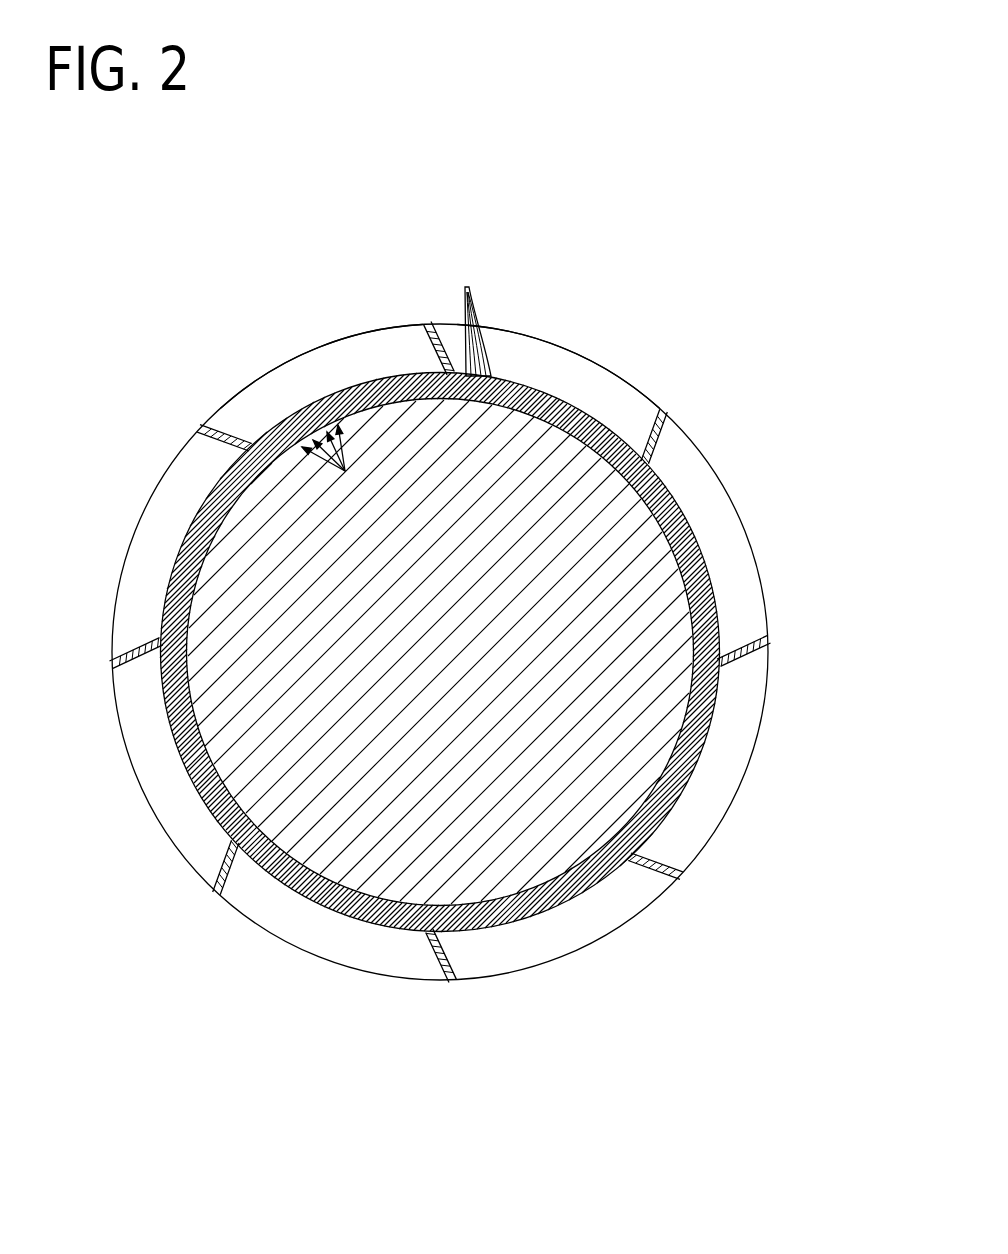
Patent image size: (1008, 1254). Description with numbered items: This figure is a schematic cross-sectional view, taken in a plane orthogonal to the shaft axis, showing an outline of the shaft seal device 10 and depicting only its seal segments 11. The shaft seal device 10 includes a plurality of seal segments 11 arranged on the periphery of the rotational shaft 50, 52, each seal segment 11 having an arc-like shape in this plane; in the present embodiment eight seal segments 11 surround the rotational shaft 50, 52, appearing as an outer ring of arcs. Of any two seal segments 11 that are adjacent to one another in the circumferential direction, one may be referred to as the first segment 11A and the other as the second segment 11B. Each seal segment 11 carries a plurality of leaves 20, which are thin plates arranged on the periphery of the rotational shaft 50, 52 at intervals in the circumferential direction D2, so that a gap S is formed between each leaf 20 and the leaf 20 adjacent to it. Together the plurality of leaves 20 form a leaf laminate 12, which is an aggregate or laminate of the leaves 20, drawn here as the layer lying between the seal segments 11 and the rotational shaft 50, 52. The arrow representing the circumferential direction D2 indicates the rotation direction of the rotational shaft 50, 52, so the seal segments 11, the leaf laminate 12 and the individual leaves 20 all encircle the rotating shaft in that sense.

The shaft seal device 10 is at (458, 645).
The seal segment 11 is at (746, 510).
The first segment 11A is at (288, 360).
The second segment 11B is at (537, 335).
The leaf laminate 12 is at (275, 423).
The leaf 20 is at (467, 292).
The rotational shaft 50 is at (496, 652).
The rotational shaft 52 is at (652, 530).
The gap S is at (331, 462).
The circumferential direction D2 is at (895, 482).